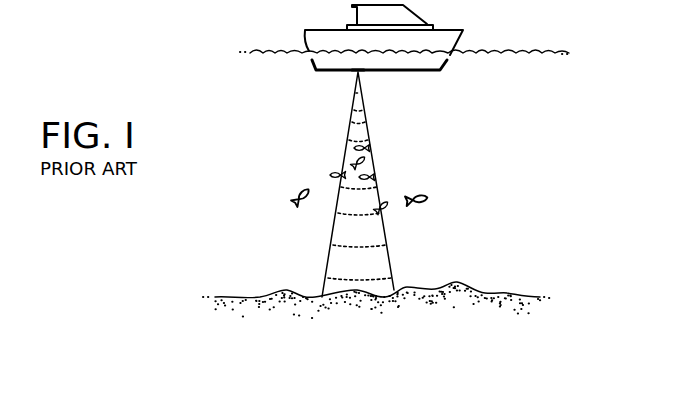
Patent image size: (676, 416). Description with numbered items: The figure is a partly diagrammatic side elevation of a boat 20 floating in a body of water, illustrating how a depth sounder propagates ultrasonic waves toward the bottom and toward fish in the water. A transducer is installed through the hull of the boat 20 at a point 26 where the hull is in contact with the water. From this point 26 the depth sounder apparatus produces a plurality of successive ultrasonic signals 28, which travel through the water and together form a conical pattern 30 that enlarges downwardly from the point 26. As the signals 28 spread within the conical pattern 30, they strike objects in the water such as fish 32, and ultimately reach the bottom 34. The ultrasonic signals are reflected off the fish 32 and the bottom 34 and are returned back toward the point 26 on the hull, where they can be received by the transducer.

The boat 20 is at (463, 32).
The point 26 is at (357, 73).
The ultrasonic signals 28 is at (357, 215).
The conical pattern 30 is at (369, 126).
The fish 32 is at (306, 186).
The bottom 34 is at (467, 288).